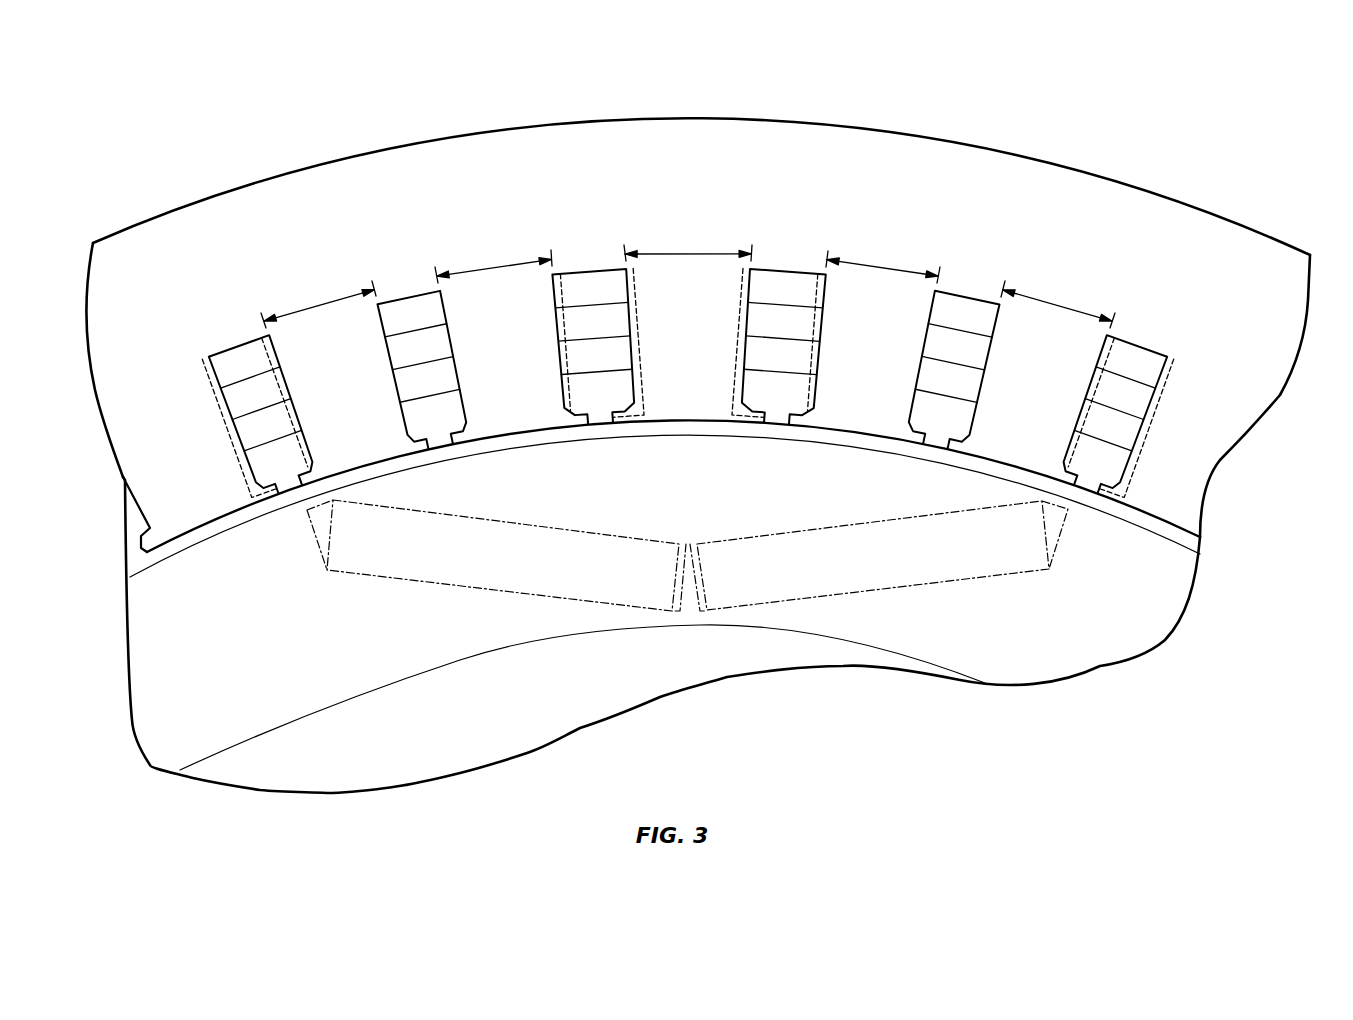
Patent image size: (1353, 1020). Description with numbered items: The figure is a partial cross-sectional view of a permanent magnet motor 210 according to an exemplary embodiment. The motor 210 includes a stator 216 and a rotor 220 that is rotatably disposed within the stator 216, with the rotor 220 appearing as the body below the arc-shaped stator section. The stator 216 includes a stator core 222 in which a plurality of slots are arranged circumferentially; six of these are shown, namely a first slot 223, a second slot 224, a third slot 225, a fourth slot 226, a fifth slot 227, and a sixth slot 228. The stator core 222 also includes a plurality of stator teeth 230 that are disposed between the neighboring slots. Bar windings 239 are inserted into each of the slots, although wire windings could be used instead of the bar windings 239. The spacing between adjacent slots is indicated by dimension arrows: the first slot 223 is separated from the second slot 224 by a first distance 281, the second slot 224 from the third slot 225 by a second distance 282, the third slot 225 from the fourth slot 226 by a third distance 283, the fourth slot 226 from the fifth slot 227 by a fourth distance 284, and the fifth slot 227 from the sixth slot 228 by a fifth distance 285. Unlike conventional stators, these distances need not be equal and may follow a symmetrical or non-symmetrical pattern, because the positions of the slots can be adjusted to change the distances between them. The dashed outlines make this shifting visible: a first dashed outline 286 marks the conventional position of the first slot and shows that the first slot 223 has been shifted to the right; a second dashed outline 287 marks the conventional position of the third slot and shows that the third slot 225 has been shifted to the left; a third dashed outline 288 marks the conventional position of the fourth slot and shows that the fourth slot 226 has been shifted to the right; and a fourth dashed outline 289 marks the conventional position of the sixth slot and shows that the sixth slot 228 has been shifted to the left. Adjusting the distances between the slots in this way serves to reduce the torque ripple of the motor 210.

The motor 210 is at (698, 306).
The stator 216 is at (305, 185).
The rotor 220 is at (163, 701).
The stator core 222 is at (683, 172).
The first slot 223 is at (248, 335).
The second slot 224 is at (396, 304).
The third slot 225 is at (560, 269).
The fourth slot 226 is at (818, 269).
The fifth slot 227 is at (956, 294).
The sixth slot 228 is at (1114, 334).
The stator teeth 230 is at (318, 401).
The bar windings 239 is at (223, 372).
The first distance 281 is at (318, 306).
The second distance 282 is at (496, 268).
The third distance 283 is at (678, 253).
The fourth distance 284 is at (880, 267).
The fifth distance 285 is at (1050, 308).
The first dashed outline 286 is at (222, 437).
The second dashed outline 287 is at (633, 322).
The third dashed outline 288 is at (748, 355).
The fourth dashed outline 289 is at (1148, 437).